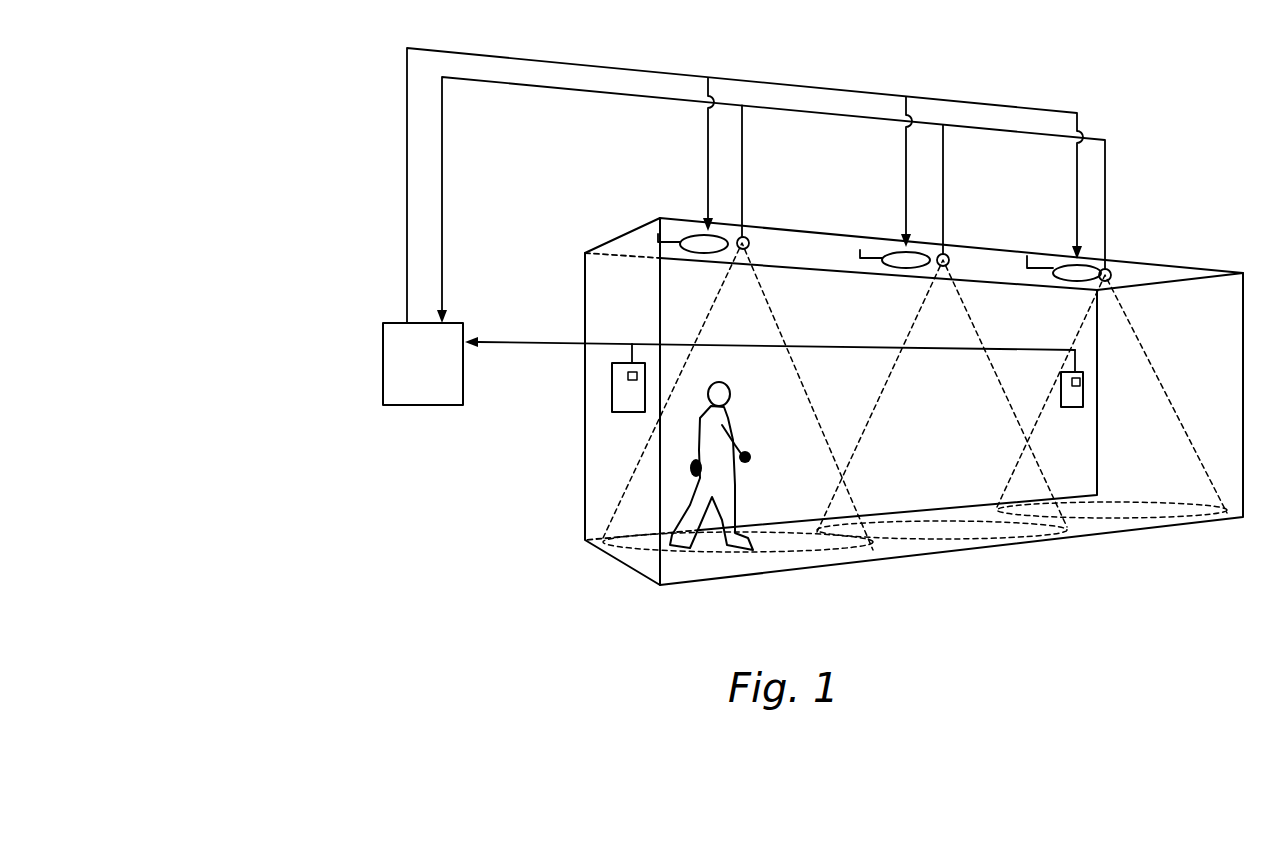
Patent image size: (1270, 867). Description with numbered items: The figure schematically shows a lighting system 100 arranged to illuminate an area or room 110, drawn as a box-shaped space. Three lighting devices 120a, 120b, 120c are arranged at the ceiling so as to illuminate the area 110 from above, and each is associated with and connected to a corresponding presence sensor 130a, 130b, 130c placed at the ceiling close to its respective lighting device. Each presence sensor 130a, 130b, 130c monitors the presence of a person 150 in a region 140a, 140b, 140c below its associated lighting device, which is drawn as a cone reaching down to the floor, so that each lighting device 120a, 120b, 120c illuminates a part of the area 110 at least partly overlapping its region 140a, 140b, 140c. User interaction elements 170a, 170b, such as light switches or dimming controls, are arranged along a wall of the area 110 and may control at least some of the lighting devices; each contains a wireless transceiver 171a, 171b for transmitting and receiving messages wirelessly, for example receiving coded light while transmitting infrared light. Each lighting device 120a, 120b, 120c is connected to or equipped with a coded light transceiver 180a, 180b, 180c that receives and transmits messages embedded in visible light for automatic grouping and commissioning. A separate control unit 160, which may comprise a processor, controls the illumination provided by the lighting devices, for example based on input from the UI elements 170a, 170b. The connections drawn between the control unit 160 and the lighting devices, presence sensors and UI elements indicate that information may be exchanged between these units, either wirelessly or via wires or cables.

The lighting system 100 is at (268, 182).
The area or room 110 is at (601, 321).
The lighting device 120a is at (697, 232).
The lighting device 120b is at (895, 250).
The lighting device 120c is at (1070, 262).
The presence sensor 130a is at (750, 237).
The presence sensor 130b is at (949, 257).
The presence sensor 130c is at (1111, 272).
The region 140a is at (800, 377).
The region 140b is at (995, 374).
The region 140c is at (1155, 360).
The person 150 is at (733, 437).
The control unit 160 is at (442, 378).
The user interaction element 170a is at (630, 402).
The user interaction element 170b is at (1075, 398).
The wireless transceiver 171a is at (626, 376).
The wireless transceiver 171b is at (1082, 383).
The coded light transceiver 180a is at (657, 236).
The coded light transceiver 180b is at (862, 252).
The coded light transceiver 180c is at (1027, 258).